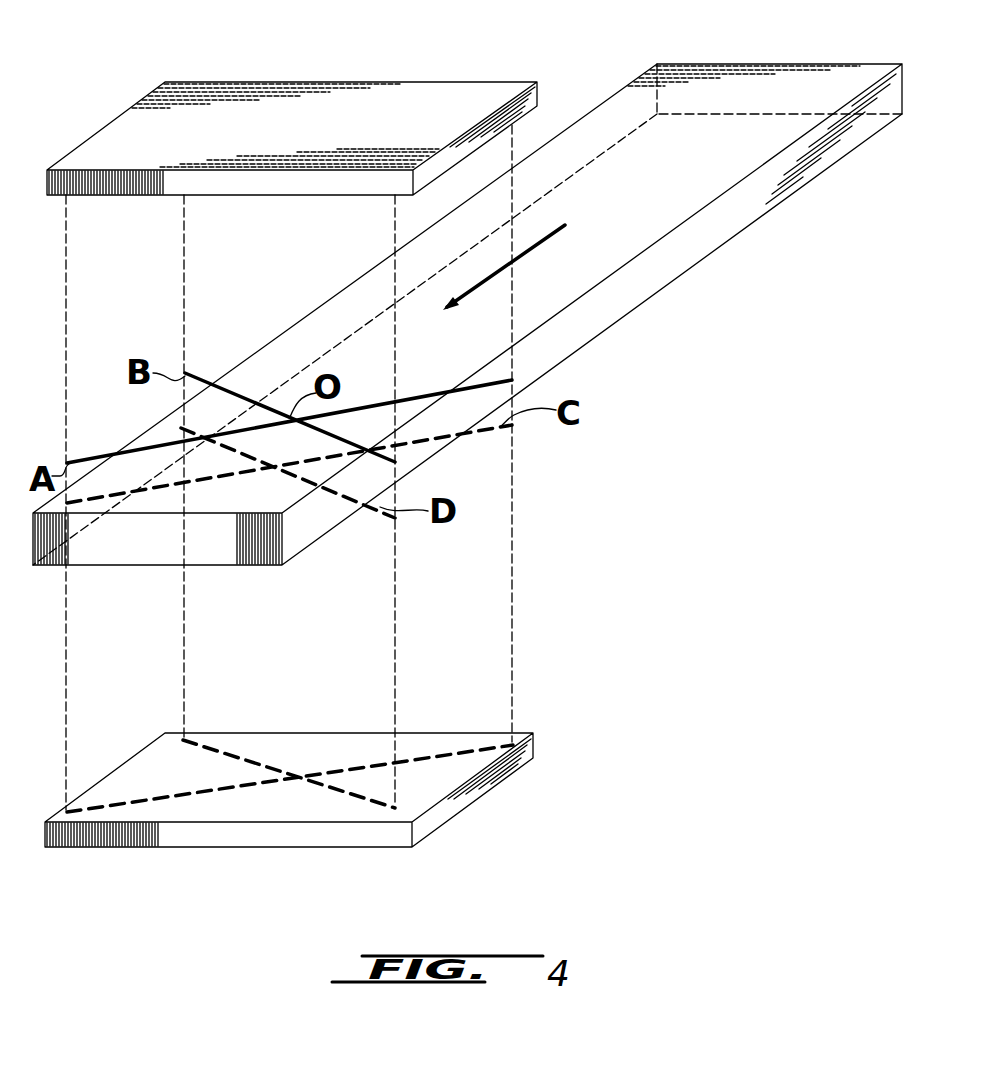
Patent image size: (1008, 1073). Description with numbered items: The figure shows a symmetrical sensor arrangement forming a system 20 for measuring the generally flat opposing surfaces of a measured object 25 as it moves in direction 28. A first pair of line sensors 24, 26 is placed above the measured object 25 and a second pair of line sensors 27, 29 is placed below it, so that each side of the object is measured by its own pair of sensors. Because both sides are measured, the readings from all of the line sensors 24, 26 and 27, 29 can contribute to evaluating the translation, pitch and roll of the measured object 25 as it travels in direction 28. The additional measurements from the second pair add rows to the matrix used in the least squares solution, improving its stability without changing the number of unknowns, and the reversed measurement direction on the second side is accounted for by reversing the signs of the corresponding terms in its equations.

The system 20 is at (638, 563).
The line sensor 24 is at (292, 98).
The measured object 25 is at (728, 215).
The line sensor 26 is at (288, 112).
The line sensor 27 is at (322, 797).
The direction 28 is at (530, 252).
The line sensor 29 is at (490, 788).